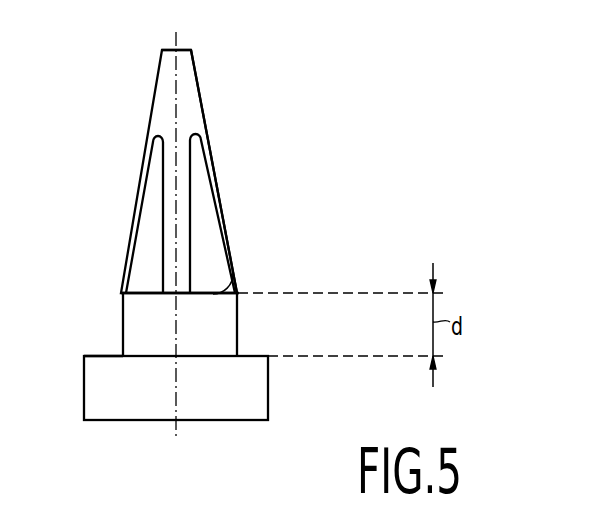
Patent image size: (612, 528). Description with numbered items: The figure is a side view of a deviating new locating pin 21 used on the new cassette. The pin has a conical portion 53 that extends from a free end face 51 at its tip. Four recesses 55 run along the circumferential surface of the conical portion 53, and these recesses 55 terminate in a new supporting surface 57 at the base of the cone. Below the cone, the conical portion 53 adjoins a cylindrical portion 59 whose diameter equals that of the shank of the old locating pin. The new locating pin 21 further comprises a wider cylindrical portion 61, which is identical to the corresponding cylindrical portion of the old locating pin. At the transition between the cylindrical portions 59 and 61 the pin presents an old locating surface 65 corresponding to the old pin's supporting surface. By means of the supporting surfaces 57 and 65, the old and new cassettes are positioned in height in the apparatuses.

The new locating pin 21 is at (217, 182).
The free end face 51 is at (183, 45).
The conical portion 53 is at (190, 112).
The recesses 55 is at (142, 258).
The new supporting surface 57 is at (233, 274).
The cylindrical portion 59 is at (222, 336).
The cylindrical portion 61 is at (250, 393).
The old locating surface 65 is at (105, 357).